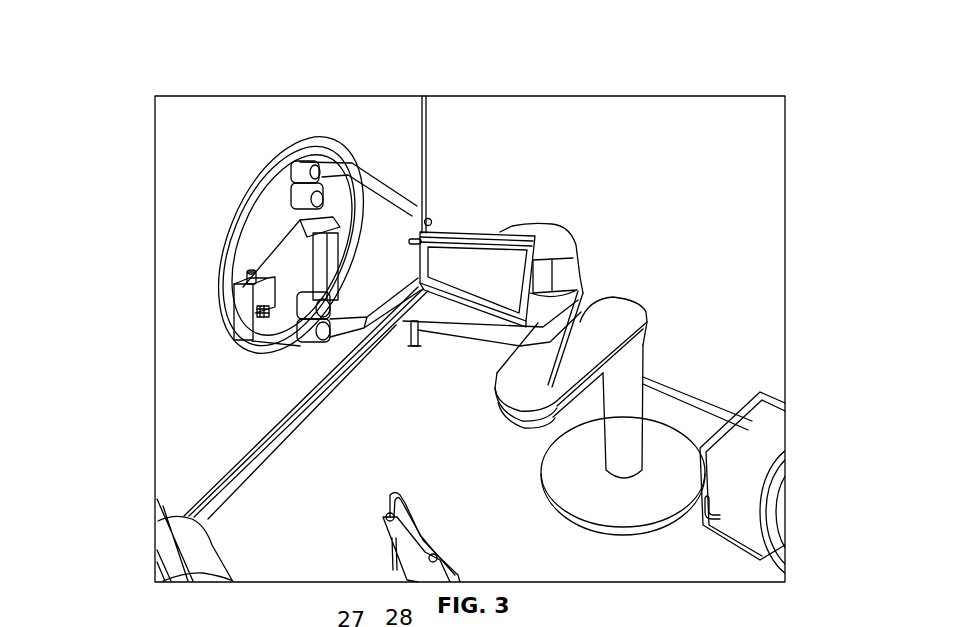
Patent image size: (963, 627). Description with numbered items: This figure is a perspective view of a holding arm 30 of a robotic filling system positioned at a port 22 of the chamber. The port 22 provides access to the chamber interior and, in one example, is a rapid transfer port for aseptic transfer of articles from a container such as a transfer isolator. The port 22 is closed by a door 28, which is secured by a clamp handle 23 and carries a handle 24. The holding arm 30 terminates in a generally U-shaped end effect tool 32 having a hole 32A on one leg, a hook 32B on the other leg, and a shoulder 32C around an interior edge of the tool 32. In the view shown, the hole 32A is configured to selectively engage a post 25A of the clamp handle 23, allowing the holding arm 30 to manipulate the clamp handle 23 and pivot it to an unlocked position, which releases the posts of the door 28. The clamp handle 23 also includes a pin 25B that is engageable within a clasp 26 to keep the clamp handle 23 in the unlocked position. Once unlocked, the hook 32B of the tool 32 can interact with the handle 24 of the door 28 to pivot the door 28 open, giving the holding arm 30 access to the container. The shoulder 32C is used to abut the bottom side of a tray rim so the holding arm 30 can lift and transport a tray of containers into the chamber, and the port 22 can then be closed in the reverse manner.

The port 22 is at (232, 228).
The clamp handle 23 is at (391, 185).
The handle 24 is at (337, 263).
The post 25A is at (435, 220).
The pin 25B is at (433, 222).
The clasp 26 is at (256, 311).
The door 28 is at (283, 208).
The holding arm 30 is at (648, 290).
The end effect tool 32 is at (572, 171).
The hole 32A is at (438, 219).
The hook 32B is at (410, 344).
The shoulder 32C is at (535, 232).